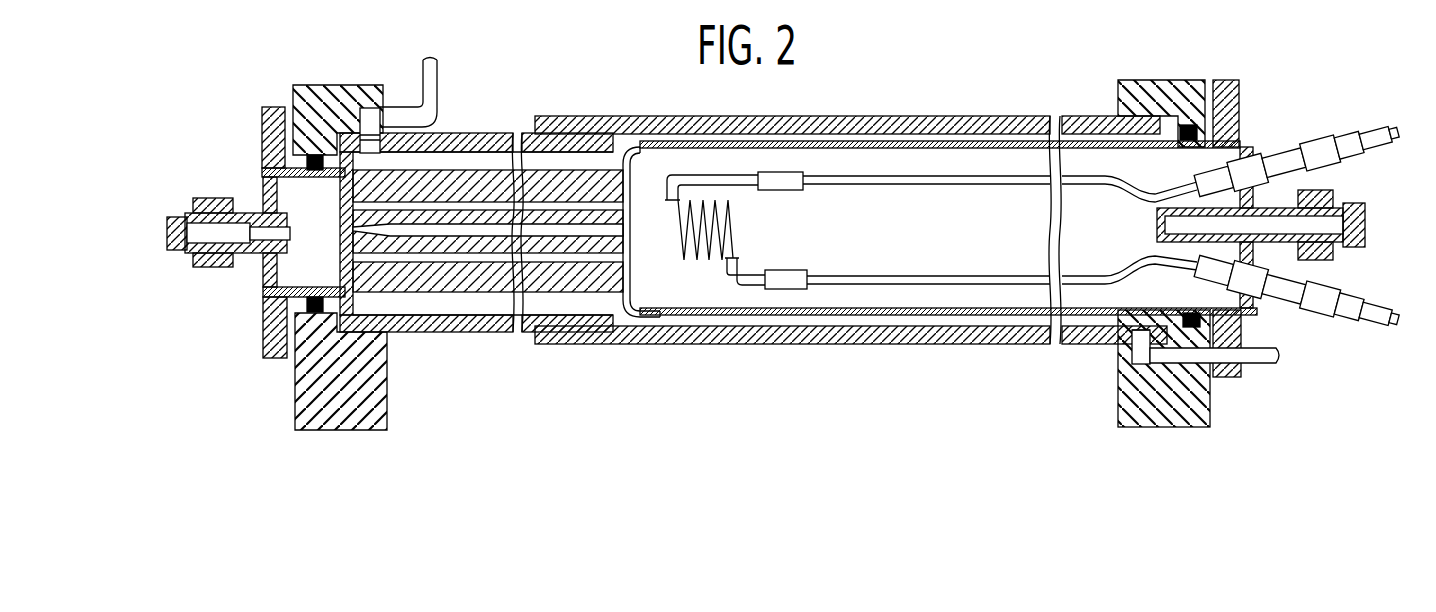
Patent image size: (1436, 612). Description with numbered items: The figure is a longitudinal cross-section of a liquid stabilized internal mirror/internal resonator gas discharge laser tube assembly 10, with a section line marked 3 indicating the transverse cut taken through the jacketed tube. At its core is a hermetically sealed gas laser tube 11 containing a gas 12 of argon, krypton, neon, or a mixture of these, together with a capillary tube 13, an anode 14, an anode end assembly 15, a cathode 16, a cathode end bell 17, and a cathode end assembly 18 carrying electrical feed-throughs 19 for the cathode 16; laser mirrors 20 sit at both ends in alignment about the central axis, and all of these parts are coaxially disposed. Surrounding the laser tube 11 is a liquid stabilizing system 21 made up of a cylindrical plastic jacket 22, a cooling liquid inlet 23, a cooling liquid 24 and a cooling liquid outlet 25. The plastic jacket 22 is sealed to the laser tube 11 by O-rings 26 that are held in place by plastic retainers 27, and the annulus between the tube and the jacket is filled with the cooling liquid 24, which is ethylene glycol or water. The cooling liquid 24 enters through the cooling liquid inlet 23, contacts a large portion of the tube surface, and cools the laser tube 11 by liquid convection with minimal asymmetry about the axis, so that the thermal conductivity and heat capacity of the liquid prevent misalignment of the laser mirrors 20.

The section line 3- 3 is at (480, 370).
The liquid stabilized internal mirror/internal resonator gas discharge laser tube as 10 is at (910, 95).
The hermetically sealed gas laser tube 11 is at (437, 308).
The gas 12 is at (630, 232).
The capillary tube 13 is at (548, 236).
The anode 14 is at (263, 292).
The anode end assembly 15 is at (262, 265).
The cathode 16 is at (670, 193).
The cathode end bell 17 is at (1006, 146).
The cathode end assembly 18 is at (1245, 155).
The electrical feed-throughs 19 is at (1367, 140).
The laser mirrors 20 is at (178, 228).
The liquid stabilizing system 21 is at (1102, 353).
The cylindrical plastic jacket 22 is at (876, 337).
The cooling liquid inlet 23 is at (1262, 362).
The cooling liquid 24 is at (980, 328).
The cooling liquid outlet 25 is at (428, 74).
The O-rings 26 is at (308, 170).
The plastic retainers 27 is at (272, 118).